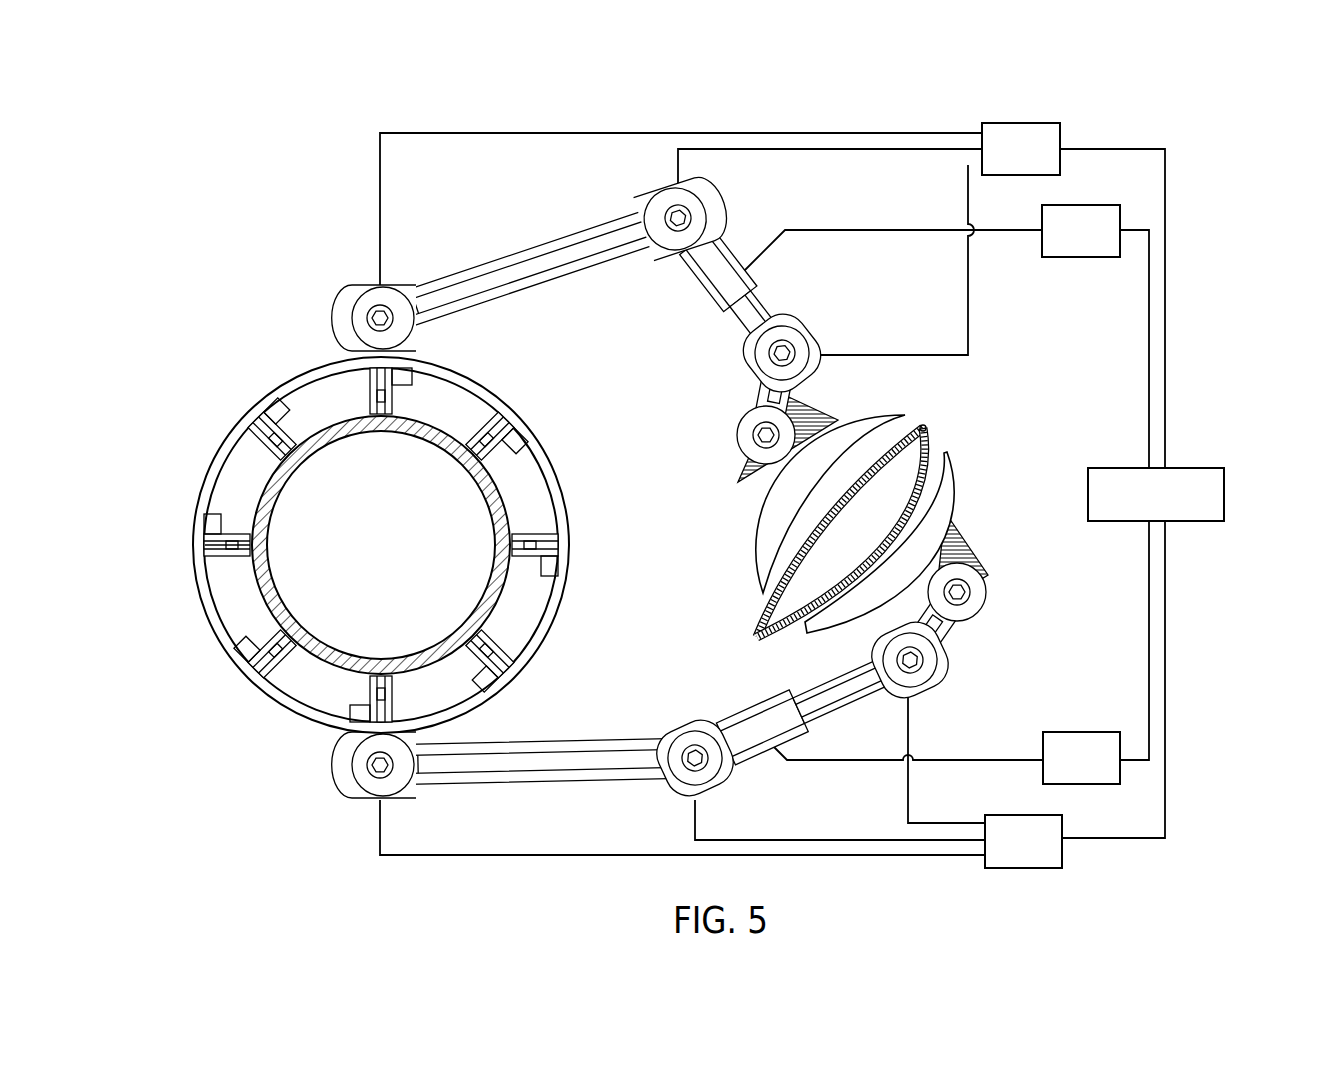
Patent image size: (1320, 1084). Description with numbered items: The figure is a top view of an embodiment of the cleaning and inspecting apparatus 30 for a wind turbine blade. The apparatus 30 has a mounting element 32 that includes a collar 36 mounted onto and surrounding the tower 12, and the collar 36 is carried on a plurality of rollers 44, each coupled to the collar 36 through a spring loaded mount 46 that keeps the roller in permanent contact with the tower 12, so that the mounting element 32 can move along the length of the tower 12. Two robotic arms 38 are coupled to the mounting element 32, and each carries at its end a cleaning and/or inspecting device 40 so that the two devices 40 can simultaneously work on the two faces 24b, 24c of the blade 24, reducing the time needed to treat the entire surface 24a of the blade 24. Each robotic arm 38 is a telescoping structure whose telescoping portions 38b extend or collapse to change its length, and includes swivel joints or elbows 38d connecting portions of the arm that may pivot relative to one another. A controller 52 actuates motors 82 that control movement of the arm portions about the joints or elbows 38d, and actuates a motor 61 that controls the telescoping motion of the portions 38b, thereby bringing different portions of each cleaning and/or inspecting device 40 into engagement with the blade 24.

The tower 12 is at (335, 411).
The blade 24 is at (841, 519).
The surface of the blade 24a is at (942, 449).
The face of the blade 24b is at (760, 622).
The face of the blade 24c is at (945, 416).
The cleaning and inspecting apparatus 30 is at (367, 520).
The mounting element 32 is at (214, 340).
The collar 36 is at (204, 604).
The robotic arm 38 is at (640, 498).
The telescoping portions 38b is at (725, 328).
The swivel joints or elbows 38d is at (356, 290).
The cleaning and/or inspecting device 40 is at (956, 472).
The rollers 44 is at (250, 544).
The spring loaded mounts 46 is at (220, 512).
The controller 52 is at (1222, 468).
The motor 61 is at (1106, 205).
The motors 82 is at (1050, 123).